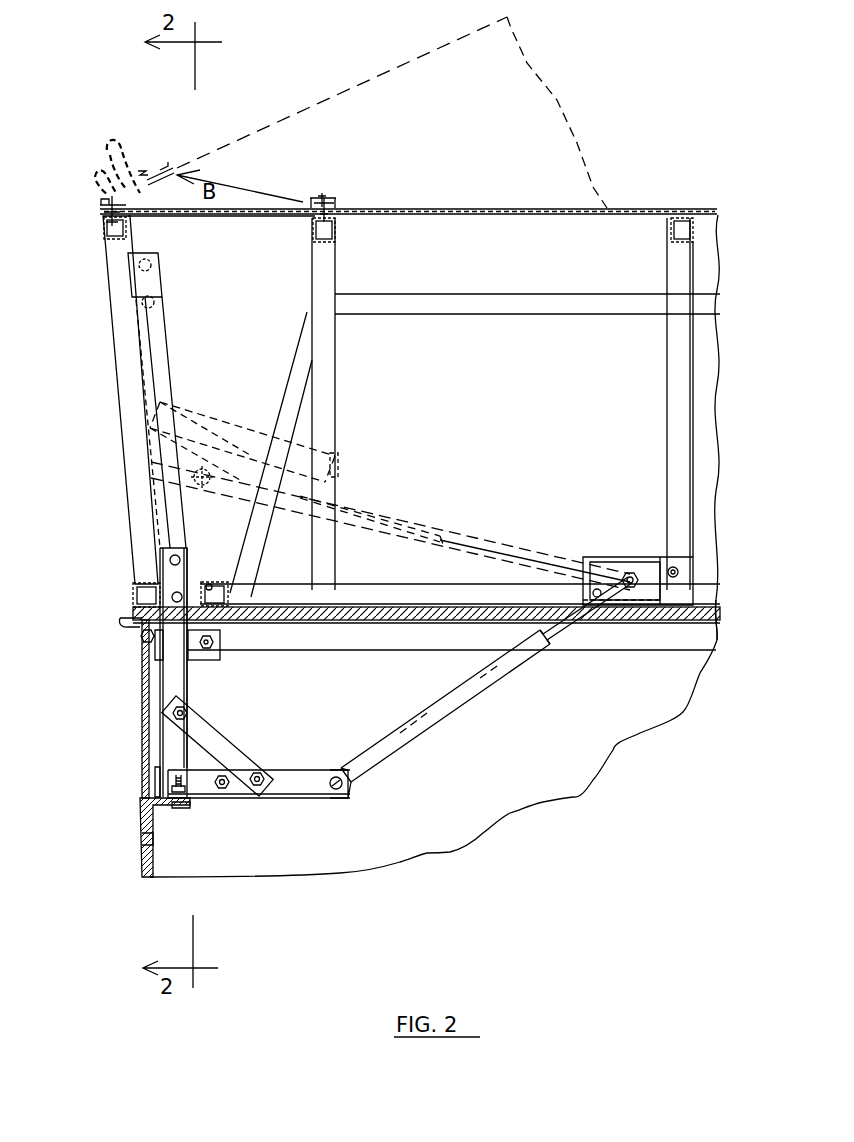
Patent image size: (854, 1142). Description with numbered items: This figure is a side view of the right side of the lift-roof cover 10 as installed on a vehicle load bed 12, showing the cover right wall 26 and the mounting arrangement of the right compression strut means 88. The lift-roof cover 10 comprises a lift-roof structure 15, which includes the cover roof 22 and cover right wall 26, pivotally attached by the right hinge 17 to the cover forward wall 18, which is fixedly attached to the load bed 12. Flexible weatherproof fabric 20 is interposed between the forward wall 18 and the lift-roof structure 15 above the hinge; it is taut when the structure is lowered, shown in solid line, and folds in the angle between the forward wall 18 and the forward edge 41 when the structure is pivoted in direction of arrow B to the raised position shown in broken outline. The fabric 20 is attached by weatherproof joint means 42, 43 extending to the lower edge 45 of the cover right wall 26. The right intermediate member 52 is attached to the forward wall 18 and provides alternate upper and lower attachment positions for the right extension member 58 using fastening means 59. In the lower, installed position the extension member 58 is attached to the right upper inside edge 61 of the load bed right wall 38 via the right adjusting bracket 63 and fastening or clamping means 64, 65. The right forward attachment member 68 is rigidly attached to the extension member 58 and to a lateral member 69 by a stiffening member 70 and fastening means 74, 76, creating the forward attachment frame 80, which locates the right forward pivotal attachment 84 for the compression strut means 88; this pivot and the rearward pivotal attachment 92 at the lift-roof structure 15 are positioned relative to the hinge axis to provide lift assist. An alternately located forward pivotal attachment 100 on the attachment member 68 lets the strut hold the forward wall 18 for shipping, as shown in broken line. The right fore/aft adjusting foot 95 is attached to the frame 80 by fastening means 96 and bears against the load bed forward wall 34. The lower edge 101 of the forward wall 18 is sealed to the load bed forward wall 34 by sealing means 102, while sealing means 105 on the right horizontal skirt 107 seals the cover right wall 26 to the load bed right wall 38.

The lift-roof cover 10 is at (697, 533).
The load bed 12 is at (627, 713).
The lift-roof structure 15 is at (682, 365).
The right hinge 17 is at (190, 600).
The cover forward wall 18 is at (130, 438).
The flexible weatherproof fabric 20 is at (163, 215).
The cover roof 22 is at (380, 70).
The cover right wall 26 is at (627, 430).
The load bed forward wall 34 is at (140, 723).
The load bed right wall 38 is at (548, 767).
The forward edge 41 is at (313, 218).
The weatherproof joint means 42 is at (104, 206).
The weatherproof joint means 43 is at (333, 207).
The lower edge of cover right wall 45 is at (258, 602).
The right intermediate member 52 is at (153, 363).
The right extension member 58 is at (120, 247).
The fastening means 59 is at (168, 315).
The right upper inside edge 61 is at (403, 640).
The right adjusting bracket 63 is at (210, 657).
The fastening or clamping means 64 is at (141, 643).
The fastening or clamping means 65 is at (213, 640).
The right compression strut means forward attachment member 68 is at (336, 452).
The lateral member 69 is at (158, 778).
The stiffening member 70 is at (175, 425).
The fastening means 74 is at (188, 714).
The fastening means 76 is at (270, 783).
The compression strut means forward attachment frame 80 is at (337, 477).
The right forward pivotal attachment 84 is at (350, 790).
The right compression strut means 88 is at (427, 520).
The right compression strut means rearward pivotal attachment 92 is at (630, 576).
The right fore/aft adjusting foot 95 is at (150, 820).
The fastening means 96 is at (180, 808).
The alternately located compression strut means forward pivotal attachment 100 is at (202, 470).
The lower edge of cover forward wall 101 is at (133, 590).
The sealing means 102 is at (137, 616).
The sealing means 105 is at (353, 613).
The right horizontal skirt 107 is at (517, 607).